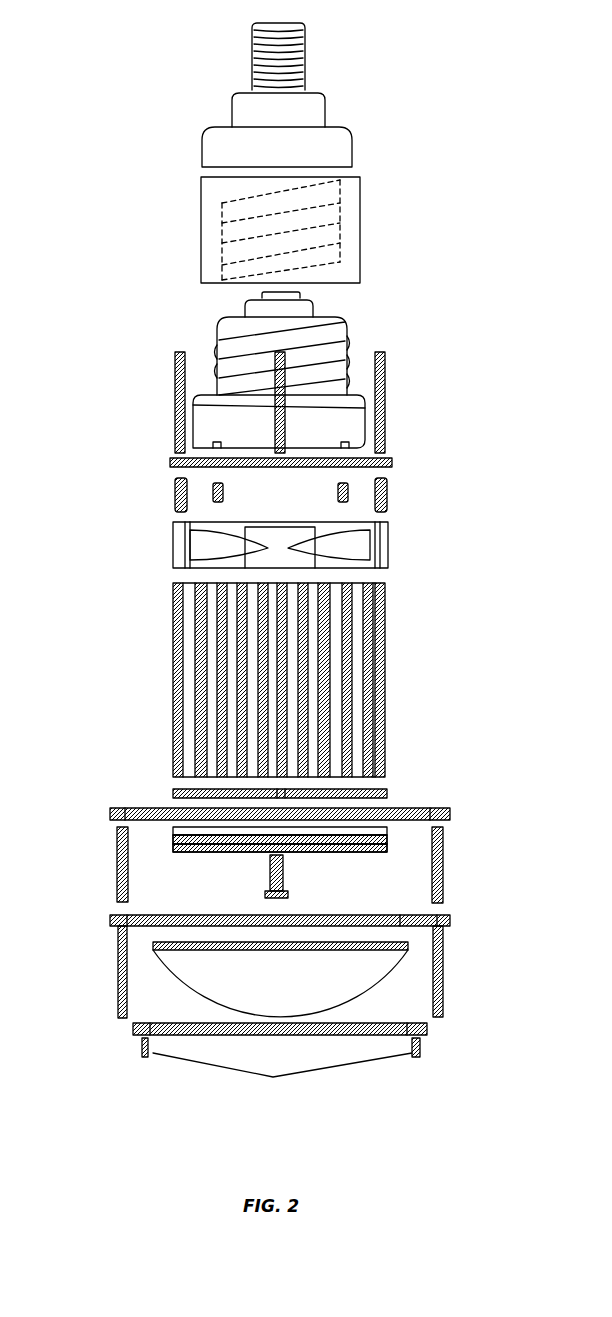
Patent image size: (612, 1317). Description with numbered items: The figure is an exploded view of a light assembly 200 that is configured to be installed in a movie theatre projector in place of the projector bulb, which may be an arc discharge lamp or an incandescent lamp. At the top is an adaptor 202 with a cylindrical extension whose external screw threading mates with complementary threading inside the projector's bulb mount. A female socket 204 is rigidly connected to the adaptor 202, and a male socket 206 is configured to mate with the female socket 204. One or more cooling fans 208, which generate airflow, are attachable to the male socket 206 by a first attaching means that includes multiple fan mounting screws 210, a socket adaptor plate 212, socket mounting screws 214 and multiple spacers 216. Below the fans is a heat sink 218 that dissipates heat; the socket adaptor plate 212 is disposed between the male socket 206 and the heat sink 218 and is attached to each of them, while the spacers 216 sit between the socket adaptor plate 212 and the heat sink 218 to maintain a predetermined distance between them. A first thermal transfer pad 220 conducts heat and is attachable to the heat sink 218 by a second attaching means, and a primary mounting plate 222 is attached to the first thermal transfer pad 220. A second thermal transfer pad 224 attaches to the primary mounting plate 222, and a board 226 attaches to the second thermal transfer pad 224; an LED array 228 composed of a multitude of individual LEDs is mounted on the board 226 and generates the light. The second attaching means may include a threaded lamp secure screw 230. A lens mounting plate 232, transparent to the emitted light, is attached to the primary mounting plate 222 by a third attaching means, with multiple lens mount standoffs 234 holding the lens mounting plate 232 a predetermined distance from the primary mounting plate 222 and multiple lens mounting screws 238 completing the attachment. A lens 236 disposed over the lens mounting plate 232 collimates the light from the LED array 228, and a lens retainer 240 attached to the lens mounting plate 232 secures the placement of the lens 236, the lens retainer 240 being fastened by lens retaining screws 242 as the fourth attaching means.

The light assembly 200 is at (414, 76).
The adaptor 202 is at (233, 123).
The female socket 204 is at (363, 240).
The male socket 206 is at (353, 417).
The fan mounting screws 210 is at (375, 437).
The socket adaptor plate 212 is at (392, 462).
The socket mounting screws 214 is at (347, 493).
The spacers 216 is at (387, 493).
The cooling fans 208 is at (388, 547).
The heat sink 218 is at (363, 670).
The first thermal transfer pad 220 is at (383, 797).
The primary mounting plate 222 is at (450, 813).
The second thermal transfer pad 224 is at (388, 830).
The board 226 is at (388, 842).
The LED array 228 is at (195, 847).
The threaded lamp secure screw 230 is at (270, 867).
The lens mounting plate 232 is at (450, 925).
The lens mount standoffs 234 is at (445, 888).
The lens 236 is at (193, 985).
The lens mounting screws 238 is at (445, 978).
The lens retainer 240 is at (427, 1032).
The lens retaining screws 242 is at (363, 1066).